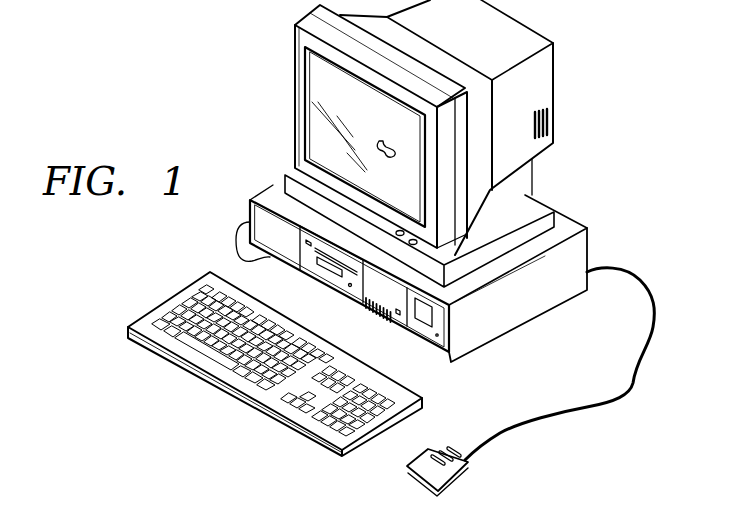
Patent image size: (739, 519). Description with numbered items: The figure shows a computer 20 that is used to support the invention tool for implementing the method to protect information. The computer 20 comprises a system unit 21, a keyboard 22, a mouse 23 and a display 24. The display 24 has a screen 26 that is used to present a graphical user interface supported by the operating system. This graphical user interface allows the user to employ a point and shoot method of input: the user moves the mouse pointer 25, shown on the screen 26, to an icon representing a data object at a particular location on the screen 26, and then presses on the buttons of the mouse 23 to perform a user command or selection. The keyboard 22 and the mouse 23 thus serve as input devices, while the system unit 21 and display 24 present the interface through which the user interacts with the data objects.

The computer 20 is at (244, 153).
The system unit 21 is at (248, 222).
The keyboard 22 is at (153, 315).
The mouse 23 is at (455, 446).
The display 24 is at (297, 70).
The mouse pointer 25 is at (379, 140).
The screen 26 is at (412, 193).